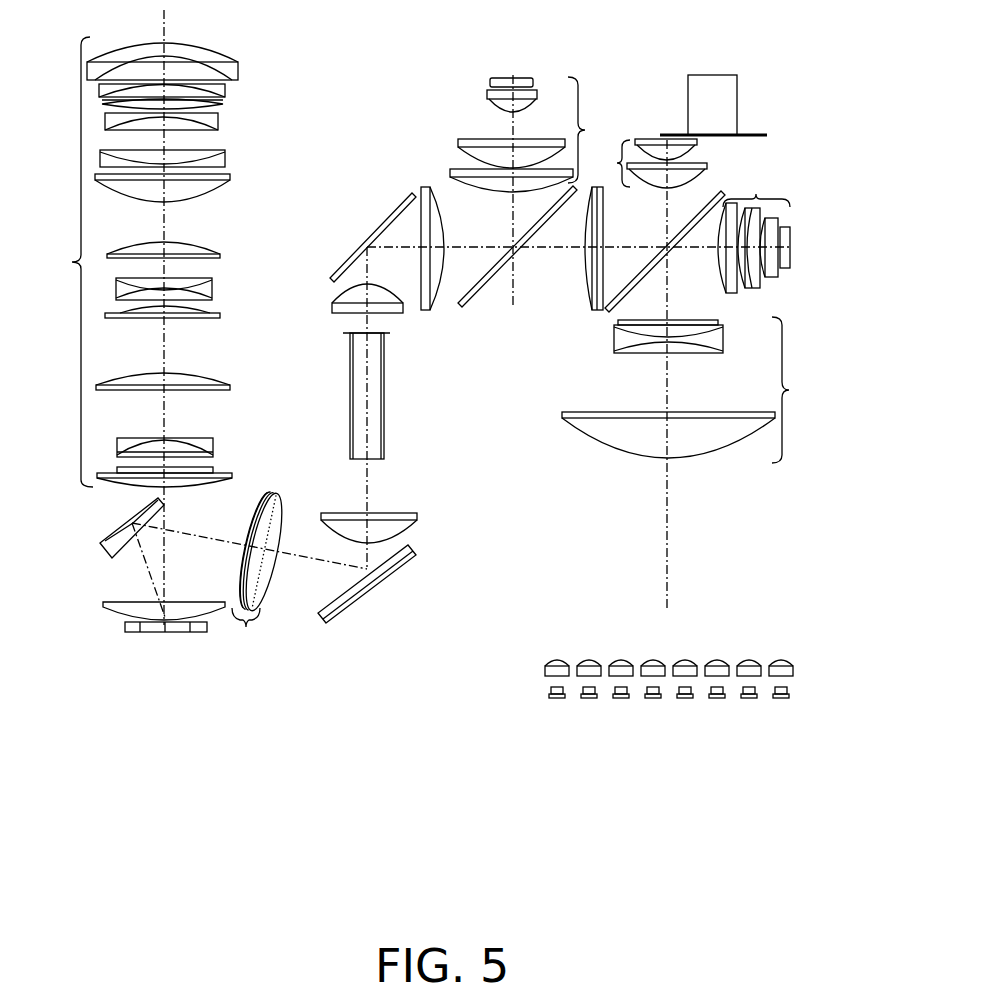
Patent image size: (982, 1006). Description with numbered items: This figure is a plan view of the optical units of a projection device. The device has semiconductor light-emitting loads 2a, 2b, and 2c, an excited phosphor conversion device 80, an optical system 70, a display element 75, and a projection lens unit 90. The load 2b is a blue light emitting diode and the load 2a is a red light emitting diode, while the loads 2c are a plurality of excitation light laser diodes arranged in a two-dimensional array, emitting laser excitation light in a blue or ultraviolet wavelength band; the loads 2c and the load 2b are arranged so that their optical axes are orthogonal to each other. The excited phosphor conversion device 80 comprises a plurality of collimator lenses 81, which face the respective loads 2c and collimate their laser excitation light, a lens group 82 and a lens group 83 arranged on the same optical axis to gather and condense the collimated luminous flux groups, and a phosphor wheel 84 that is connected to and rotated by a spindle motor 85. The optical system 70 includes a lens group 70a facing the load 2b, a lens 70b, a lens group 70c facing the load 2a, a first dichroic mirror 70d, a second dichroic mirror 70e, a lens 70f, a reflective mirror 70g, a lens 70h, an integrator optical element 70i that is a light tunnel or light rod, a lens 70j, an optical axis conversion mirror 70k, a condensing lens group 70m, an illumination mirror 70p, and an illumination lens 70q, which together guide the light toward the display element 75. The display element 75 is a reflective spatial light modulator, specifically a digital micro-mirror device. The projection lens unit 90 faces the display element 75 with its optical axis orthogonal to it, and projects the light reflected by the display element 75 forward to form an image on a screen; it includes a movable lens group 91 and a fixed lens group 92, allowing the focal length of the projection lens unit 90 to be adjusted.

The projection lens unit 90 is at (69, 262).
The movable lens group 91 is at (248, 141).
The fixed lens group 92 is at (251, 431).
The illumination mirror 70p is at (118, 537).
The illumination lens 70q is at (125, 613).
The display element 75 is at (180, 633).
The condensing lens group 70m is at (260, 574).
The reflective mirror 70g is at (340, 267).
The lens 70f is at (423, 187).
The lens 70h is at (331, 305).
The integrator optical element 70i is at (384, 395).
The lens 70j is at (402, 513).
The optical axis conversion mirror 70k is at (383, 577).
The second dichroic mirror 70e is at (508, 270).
The lens 70b is at (588, 313).
The load 2a is at (522, 78).
The lens group 70c is at (540, 134).
The lens group 83 is at (648, 163).
The phosphor wheel 84 is at (675, 133).
The spindle motor 85 is at (723, 75).
The first dichroic mirror 70d is at (716, 182).
The lens group 70a is at (754, 231).
The load 2b is at (790, 270).
The lens group 82 is at (693, 390).
The optical system 70 is at (479, 414).
The excited phosphor conversion device 80 is at (533, 563).
The collimator lenses 81 is at (653, 661).
The loads 2c is at (653, 699).